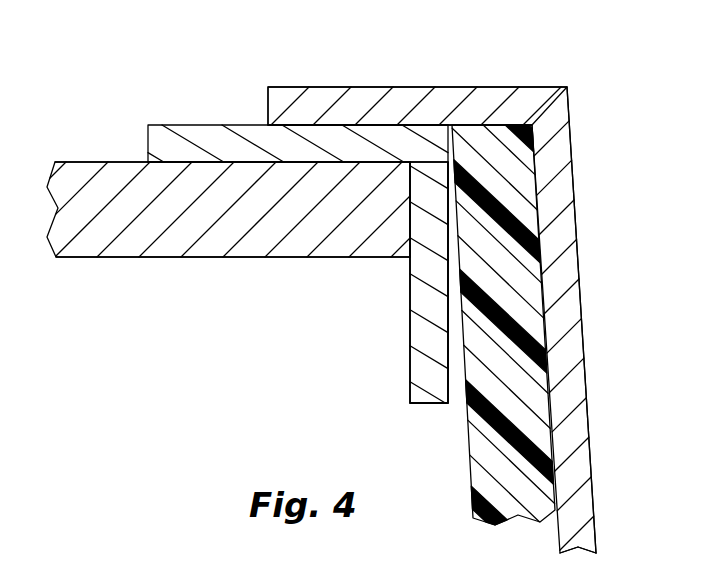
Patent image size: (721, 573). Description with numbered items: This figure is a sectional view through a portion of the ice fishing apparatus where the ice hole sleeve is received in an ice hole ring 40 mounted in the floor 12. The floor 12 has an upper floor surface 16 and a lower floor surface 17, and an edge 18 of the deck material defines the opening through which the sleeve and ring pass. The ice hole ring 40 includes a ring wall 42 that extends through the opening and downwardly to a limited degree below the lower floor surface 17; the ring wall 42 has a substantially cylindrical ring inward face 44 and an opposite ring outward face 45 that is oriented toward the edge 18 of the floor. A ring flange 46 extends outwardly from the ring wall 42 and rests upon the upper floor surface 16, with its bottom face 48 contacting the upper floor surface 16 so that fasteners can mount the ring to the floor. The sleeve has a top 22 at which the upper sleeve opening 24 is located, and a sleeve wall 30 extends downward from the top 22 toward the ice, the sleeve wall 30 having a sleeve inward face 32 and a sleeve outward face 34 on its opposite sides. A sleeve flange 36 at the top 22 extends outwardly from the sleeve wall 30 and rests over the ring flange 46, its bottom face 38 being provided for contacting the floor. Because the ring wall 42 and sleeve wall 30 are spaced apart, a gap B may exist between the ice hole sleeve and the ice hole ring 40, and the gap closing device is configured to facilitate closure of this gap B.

The floor 12 is at (108, 207).
The upper floor surface 16 is at (107, 162).
The lower floor surface 17 is at (112, 242).
The edge 18 is at (410, 195).
The top 22 is at (622, 98).
The upper sleeve opening 24 is at (598, 100).
The sleeve wall 30 is at (577, 372).
The sleeve inward face 32 is at (590, 433).
The sleeve outward face 34 is at (560, 512).
The sleeve flange 36 is at (442, 100).
The bottom face 38 is at (338, 127).
The ice hole ring 40 is at (392, 343).
The ring wall 42 is at (426, 300).
The ring inward face 44 is at (447, 392).
The ring outward face 45 is at (411, 388).
The ring flange 46 is at (216, 140).
The bottom face 48 is at (215, 162).
The gap B is at (457, 367).